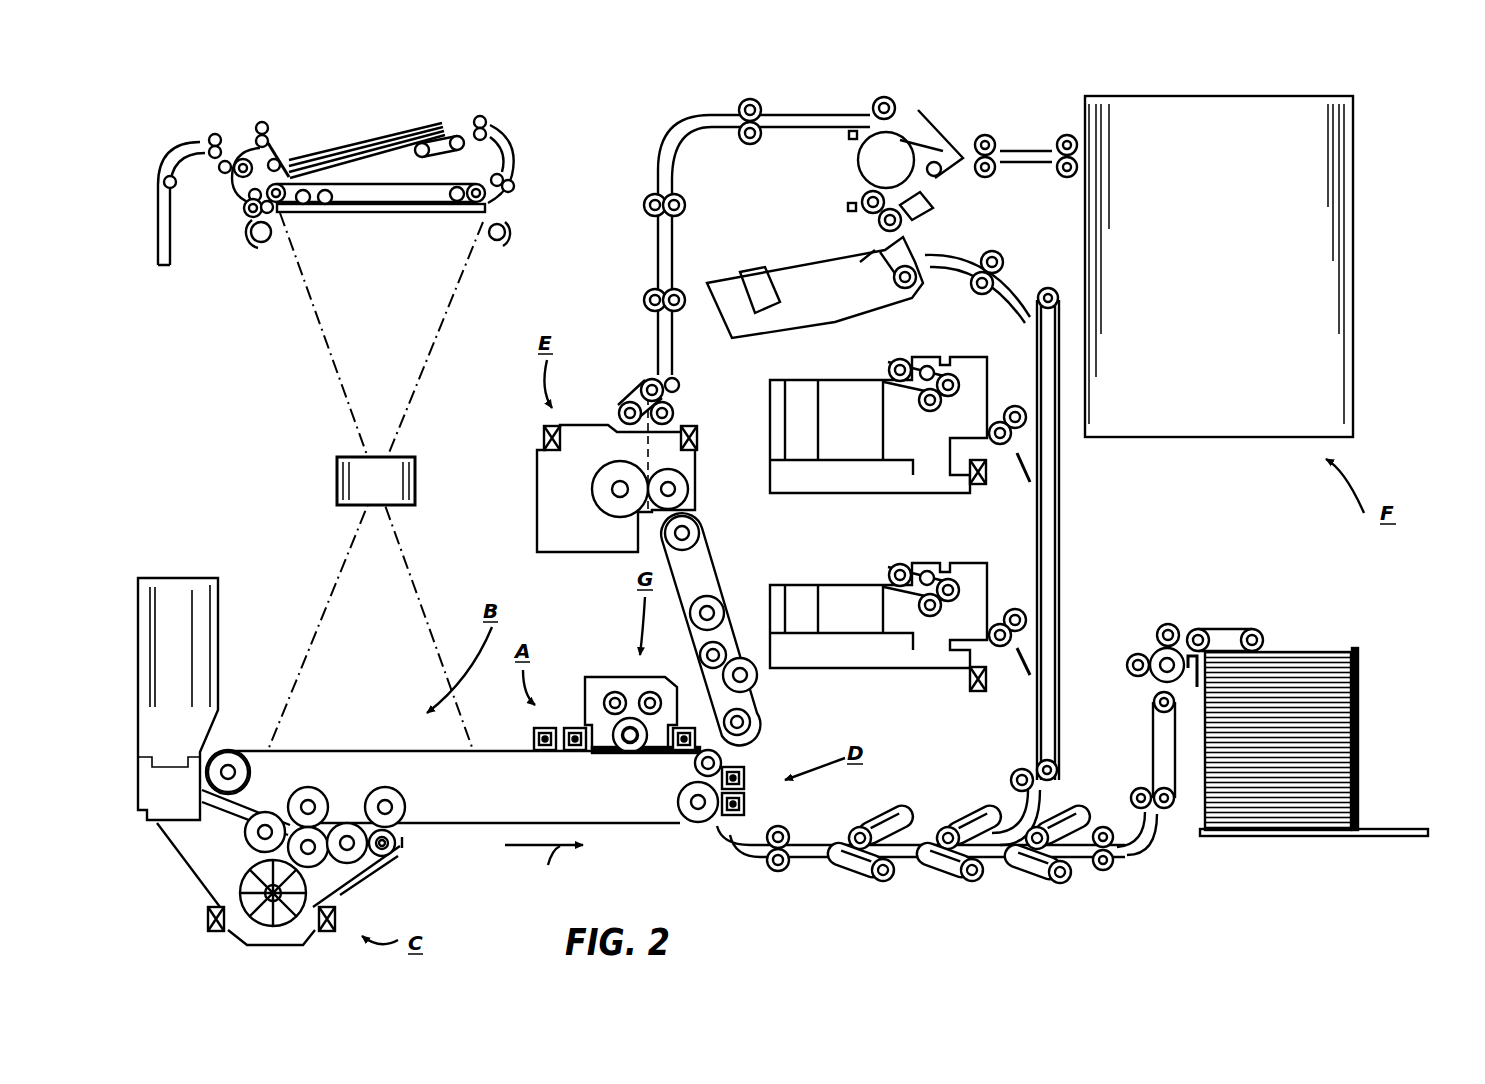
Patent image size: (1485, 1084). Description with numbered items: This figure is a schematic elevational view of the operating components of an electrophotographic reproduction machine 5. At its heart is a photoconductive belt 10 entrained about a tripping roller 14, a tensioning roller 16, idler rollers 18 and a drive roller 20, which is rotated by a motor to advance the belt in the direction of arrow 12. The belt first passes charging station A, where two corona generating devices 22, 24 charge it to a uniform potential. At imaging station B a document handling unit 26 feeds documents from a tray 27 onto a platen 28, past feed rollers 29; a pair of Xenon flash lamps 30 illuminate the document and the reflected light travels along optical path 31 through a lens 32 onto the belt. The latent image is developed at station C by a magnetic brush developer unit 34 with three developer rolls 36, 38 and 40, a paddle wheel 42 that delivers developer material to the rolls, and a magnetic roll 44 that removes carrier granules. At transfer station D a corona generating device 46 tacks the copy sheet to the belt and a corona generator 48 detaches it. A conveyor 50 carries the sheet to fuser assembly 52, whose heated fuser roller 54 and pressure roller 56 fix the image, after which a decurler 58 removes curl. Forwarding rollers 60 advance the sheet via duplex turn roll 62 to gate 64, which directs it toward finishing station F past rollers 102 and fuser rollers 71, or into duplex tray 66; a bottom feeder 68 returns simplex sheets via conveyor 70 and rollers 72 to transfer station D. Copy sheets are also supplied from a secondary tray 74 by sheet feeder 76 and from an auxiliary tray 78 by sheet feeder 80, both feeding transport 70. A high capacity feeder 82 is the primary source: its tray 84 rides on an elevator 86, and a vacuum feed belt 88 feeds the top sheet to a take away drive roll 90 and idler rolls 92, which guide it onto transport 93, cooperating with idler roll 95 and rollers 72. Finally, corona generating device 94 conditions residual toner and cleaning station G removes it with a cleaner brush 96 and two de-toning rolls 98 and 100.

The electrophotographic reproduction machine 5 is at (278, 120).
The document handling unit 26 is at (535, 158).
The document tray 27 is at (405, 150).
The platen 28 is at (423, 210).
The feed roller 29 is at (272, 213).
The Xenon flash lamps 30 is at (253, 244).
The optical imaging path 31 is at (268, 445).
The lens 32 is at (415, 478).
The forwarding rollers 60 is at (648, 197).
The duplex turn roll 62 is at (905, 158).
The gate 64 is at (937, 148).
The duplex tray 66 is at (800, 302).
The bottom feeder 68 is at (895, 295).
The exit transport rollers 102 is at (1076, 131).
The conveyor 70 is at (1060, 525).
The fuser assembly 52 is at (717, 443).
The heated fuser roller 54 is at (602, 493).
The pressure roller 56 is at (677, 490).
The decurler 58 is at (635, 395).
The secondary tray 74 is at (882, 485).
The sheet feeder 76 is at (923, 362).
The auxiliary tray 78 is at (927, 660).
The sheet feeder 80 is at (917, 570).
The conveyor 50 is at (755, 704).
The cleaner brush 96 is at (635, 720).
The de-toning roll 98 is at (647, 690).
The de-toning roll 100 is at (608, 692).
The photoconductive belt 10 is at (510, 753).
The arrow 12 is at (544, 865).
The tensioning roller 16 is at (253, 750).
The idler rollers 18 is at (372, 788).
The developer roll 36 is at (242, 848).
The developer roll 38 is at (273, 855).
The developer roll 40 is at (332, 870).
The magnetic brush developer unit 34 is at (394, 876).
The paddle wheel 42 is at (203, 914).
The magnetic roll 44 is at (398, 848).
The corona generating device 24 is at (530, 732).
The corona generating device 22 is at (572, 727).
The corona generating device 94 is at (697, 742).
The tripping roller 14 is at (695, 765).
The drive roller 20 is at (687, 810).
The corona generator 48 is at (743, 765).
The corona generating device 46 is at (742, 808).
The rollers 72 is at (767, 845).
The fuser rollers 71 is at (970, 818).
The high capacity feeder 82 is at (1316, 721).
The tray 84 is at (1300, 807).
The elevator 86 is at (1317, 835).
The vacuum feed belt 88 is at (1235, 627).
The take away drive roll 90 is at (1167, 673).
The idler rolls 92 is at (1138, 652).
The transport 93 is at (1150, 742).
The idler roll 95 is at (1150, 822).